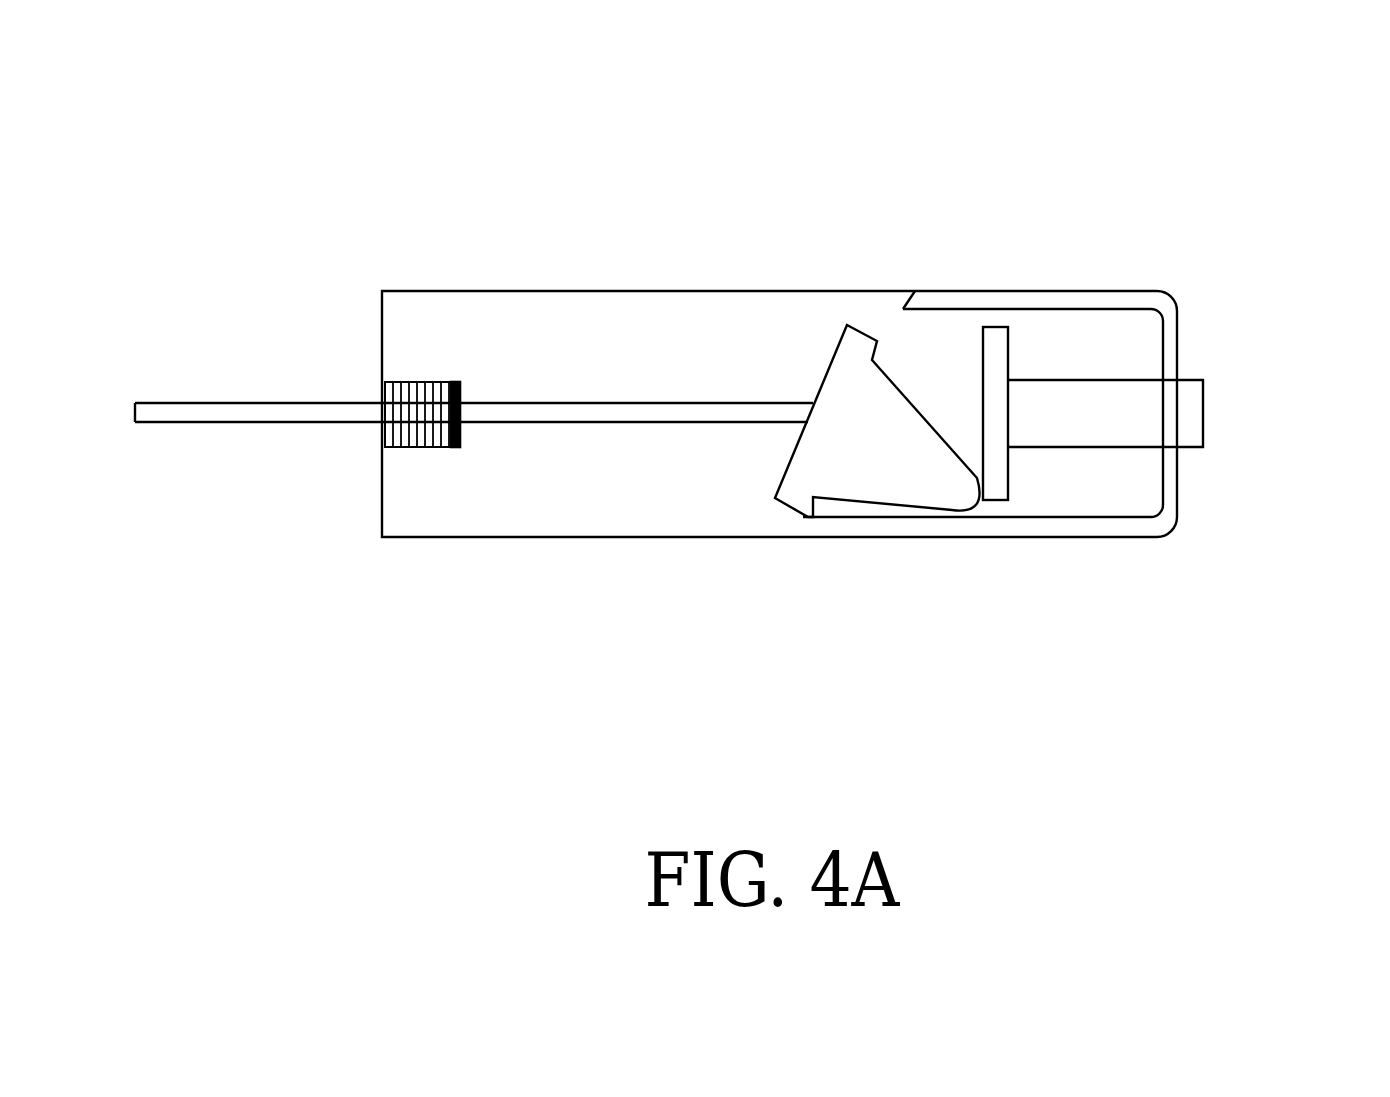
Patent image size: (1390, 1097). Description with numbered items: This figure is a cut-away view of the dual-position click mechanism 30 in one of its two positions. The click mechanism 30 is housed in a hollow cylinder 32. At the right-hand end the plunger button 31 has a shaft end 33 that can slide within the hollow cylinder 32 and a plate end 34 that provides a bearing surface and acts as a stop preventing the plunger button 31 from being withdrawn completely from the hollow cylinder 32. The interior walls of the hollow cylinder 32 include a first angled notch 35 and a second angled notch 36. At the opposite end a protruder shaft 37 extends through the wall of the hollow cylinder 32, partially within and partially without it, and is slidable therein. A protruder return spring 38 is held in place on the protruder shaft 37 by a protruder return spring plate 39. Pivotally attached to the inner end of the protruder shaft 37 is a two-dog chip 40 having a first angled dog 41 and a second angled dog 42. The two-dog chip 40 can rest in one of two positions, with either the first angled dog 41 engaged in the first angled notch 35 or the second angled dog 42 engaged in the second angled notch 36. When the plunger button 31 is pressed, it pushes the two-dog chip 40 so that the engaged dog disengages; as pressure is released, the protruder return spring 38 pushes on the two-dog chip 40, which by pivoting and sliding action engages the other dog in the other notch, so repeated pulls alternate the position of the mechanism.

The dual-position click mechanism 30 is at (754, 389).
The plunger button 31 is at (1095, 378).
The hollow cylinder 32 is at (623, 538).
The shaft end 33 is at (1208, 410).
The plate end 34 is at (982, 418).
The first angled notch 35 is at (909, 300).
The second angled notch 36 is at (857, 440).
The protruder shaft 37 is at (273, 432).
The protruder return spring 38 is at (458, 391).
The protruder return spring plate 39 is at (459, 395).
The two-dog chip 40 is at (860, 442).
The first angled dog 41 is at (877, 348).
The second angled dog 42 is at (815, 497).